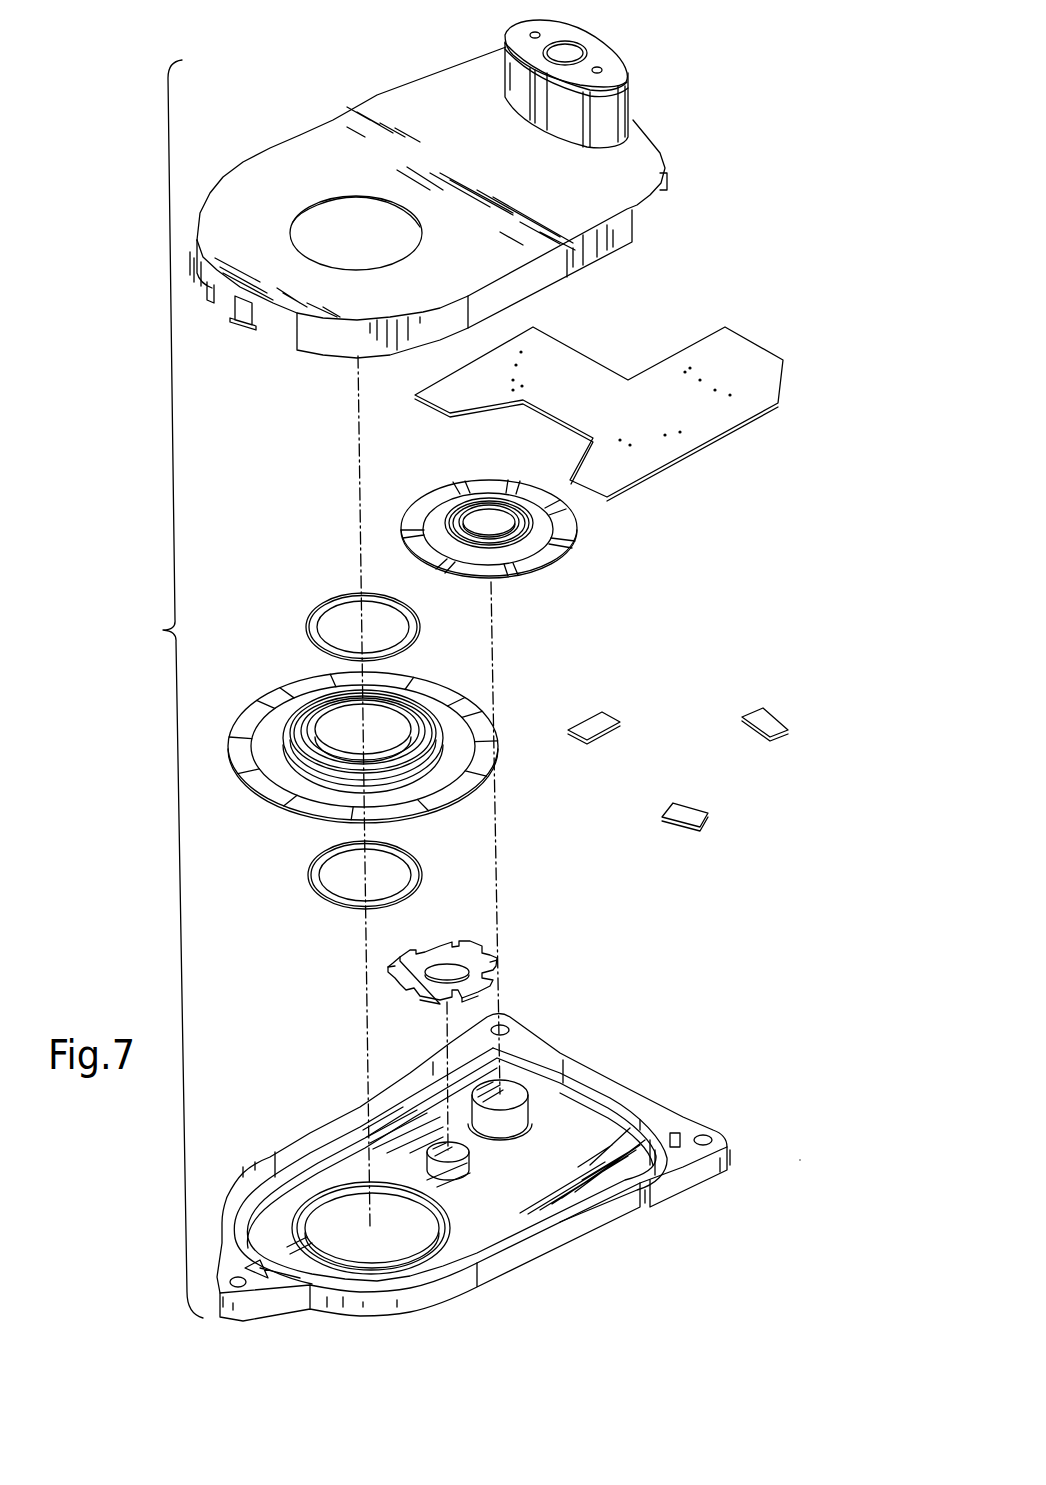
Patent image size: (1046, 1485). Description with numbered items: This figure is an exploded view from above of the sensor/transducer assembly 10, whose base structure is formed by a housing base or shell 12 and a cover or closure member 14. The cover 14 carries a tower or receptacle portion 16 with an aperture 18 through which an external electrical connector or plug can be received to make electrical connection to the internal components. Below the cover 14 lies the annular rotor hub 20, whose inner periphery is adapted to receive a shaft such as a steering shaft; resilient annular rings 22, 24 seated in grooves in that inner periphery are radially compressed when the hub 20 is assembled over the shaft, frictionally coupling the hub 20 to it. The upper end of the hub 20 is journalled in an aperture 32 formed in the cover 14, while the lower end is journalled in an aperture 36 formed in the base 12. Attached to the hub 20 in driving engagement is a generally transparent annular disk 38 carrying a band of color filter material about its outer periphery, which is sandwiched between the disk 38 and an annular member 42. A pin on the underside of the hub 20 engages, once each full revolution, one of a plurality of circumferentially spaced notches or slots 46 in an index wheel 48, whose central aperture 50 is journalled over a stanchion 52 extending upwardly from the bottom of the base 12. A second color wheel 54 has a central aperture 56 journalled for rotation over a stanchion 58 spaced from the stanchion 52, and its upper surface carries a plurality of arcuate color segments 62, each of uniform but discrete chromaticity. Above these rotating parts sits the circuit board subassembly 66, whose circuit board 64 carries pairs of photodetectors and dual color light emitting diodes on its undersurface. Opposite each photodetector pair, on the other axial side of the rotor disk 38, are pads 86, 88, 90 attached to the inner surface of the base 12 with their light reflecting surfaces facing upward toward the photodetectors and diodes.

The sensor/transducer assembly 10 is at (165, 689).
The housing base 12 is at (607, 1217).
The cover 14 is at (377, 95).
The tower 16 is at (632, 93).
The aperture 18 is at (577, 48).
The rotor hub 20 is at (305, 707).
The resilient annular ring 22 is at (342, 598).
The resilient annular ring 24 is at (343, 906).
The aperture 32 is at (367, 203).
The aperture 36 is at (397, 1199).
The annular disk 38 is at (455, 732).
The annular member 42 is at (472, 710).
The notches 46 is at (490, 956).
The index wheel 48 is at (492, 993).
The central aperture 50 is at (443, 977).
The stanchion 52 is at (467, 1153).
The second color wheel 54 is at (512, 583).
The central aperture 56 is at (474, 500).
The stanchion 58 is at (515, 1092).
The arcuate color segments 62 is at (413, 517).
The circuit board 64 is at (690, 458).
The circuit board subassembly 66 is at (634, 359).
The pad 86 is at (597, 736).
The pad 88 is at (686, 830).
The pad 90 is at (773, 738).